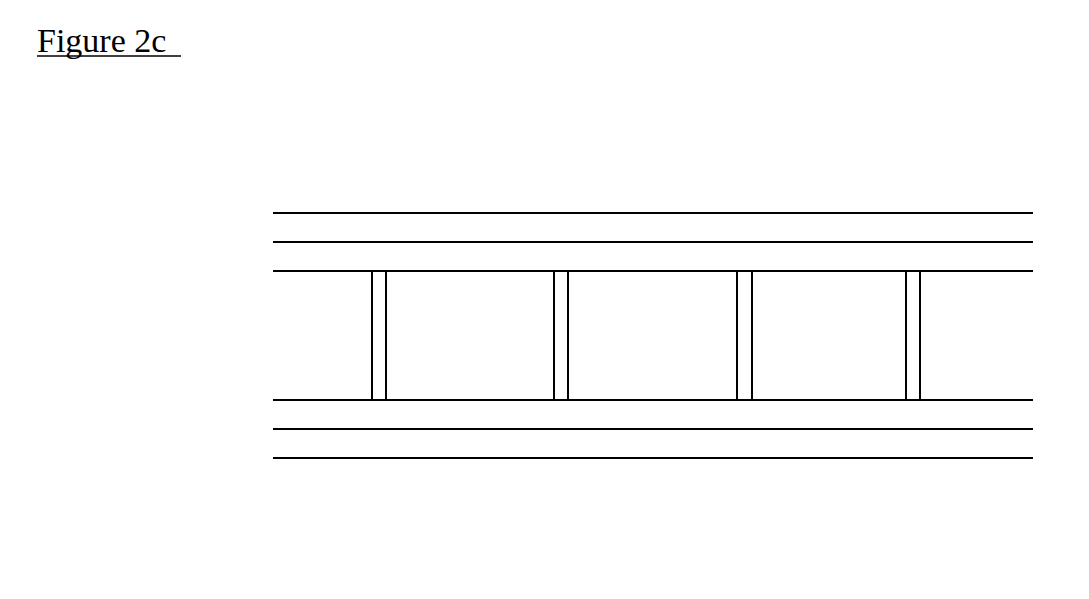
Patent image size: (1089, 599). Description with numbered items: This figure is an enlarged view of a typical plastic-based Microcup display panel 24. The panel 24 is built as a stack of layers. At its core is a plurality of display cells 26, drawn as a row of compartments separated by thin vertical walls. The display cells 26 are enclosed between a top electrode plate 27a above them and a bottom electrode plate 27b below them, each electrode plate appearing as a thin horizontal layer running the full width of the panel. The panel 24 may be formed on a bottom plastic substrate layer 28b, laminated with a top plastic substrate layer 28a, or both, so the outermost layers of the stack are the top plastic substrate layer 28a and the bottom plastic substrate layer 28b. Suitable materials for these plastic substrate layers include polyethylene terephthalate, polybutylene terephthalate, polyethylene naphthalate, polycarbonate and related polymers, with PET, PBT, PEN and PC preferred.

The display panel 24 is at (203, 198).
The display cells 26 is at (428, 314).
The top electrode plate 27a is at (625, 257).
The bottom electrode plate 27b is at (793, 413).
The top plastic substrate layer 28a is at (484, 227).
The bottom plastic substrate layer 28b is at (653, 443).